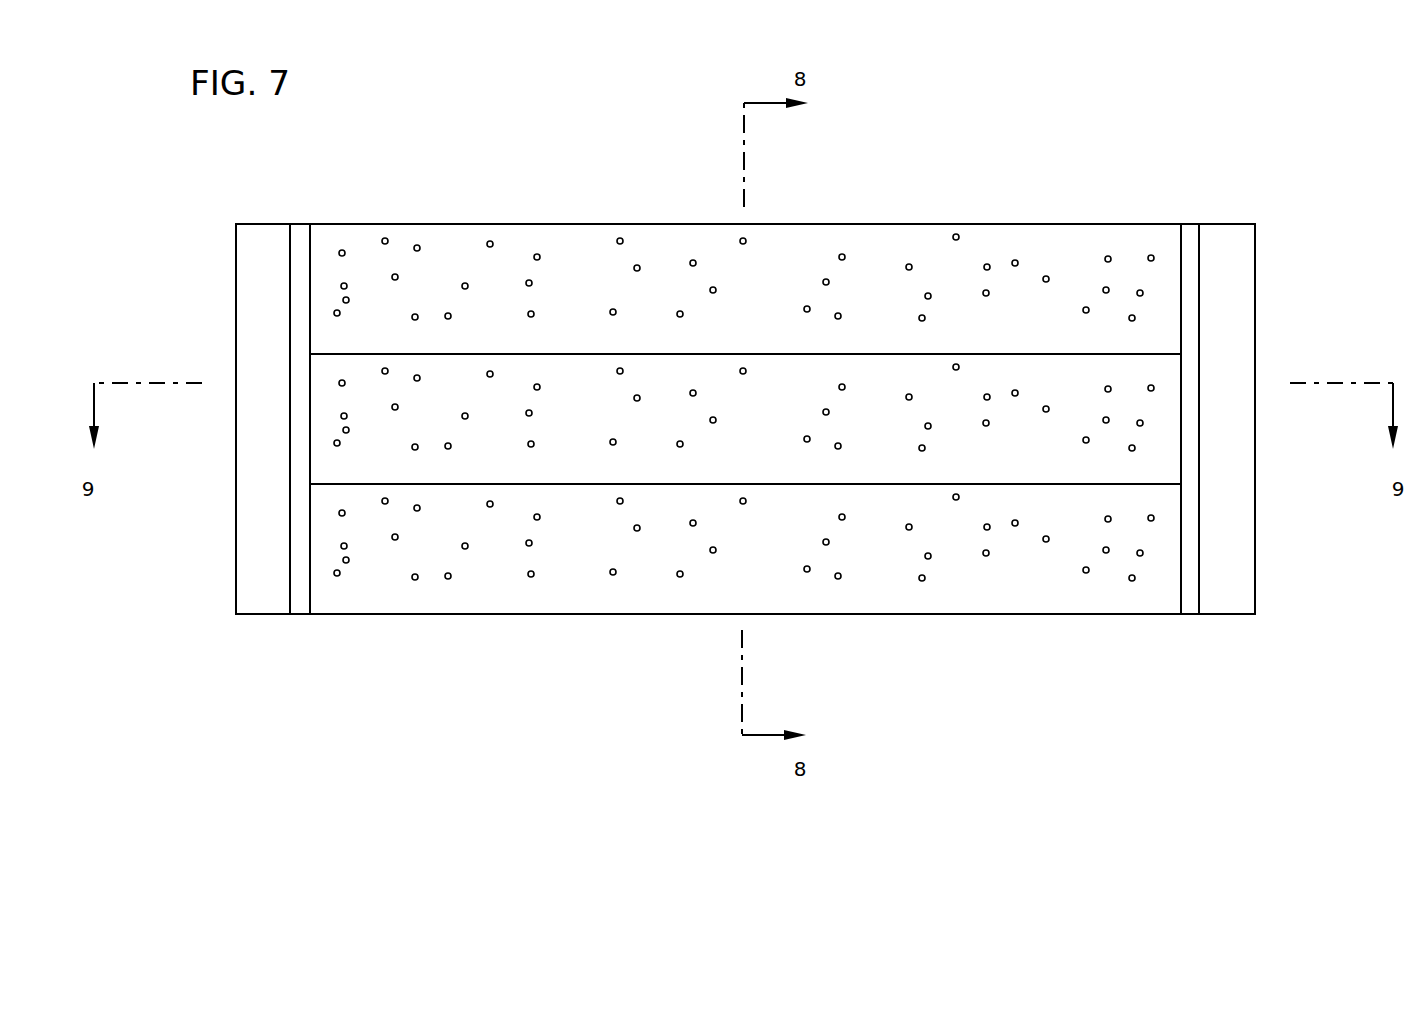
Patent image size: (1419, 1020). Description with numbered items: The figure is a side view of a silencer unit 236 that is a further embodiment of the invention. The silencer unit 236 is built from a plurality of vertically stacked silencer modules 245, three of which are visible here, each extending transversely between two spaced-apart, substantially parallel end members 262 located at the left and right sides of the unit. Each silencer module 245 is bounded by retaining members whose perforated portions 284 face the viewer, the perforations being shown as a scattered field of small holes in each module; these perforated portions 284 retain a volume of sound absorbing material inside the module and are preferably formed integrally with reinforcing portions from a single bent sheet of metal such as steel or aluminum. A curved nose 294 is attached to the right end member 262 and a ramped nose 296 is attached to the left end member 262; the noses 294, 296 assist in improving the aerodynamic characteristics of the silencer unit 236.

The silencer unit 236 is at (868, 163).
The silencer module 245 is at (938, 224).
The end member 262 is at (291, 260).
The perforated portion 284 is at (765, 331).
The curved nose 294 is at (1255, 590).
The ramped nose 296 is at (268, 614).